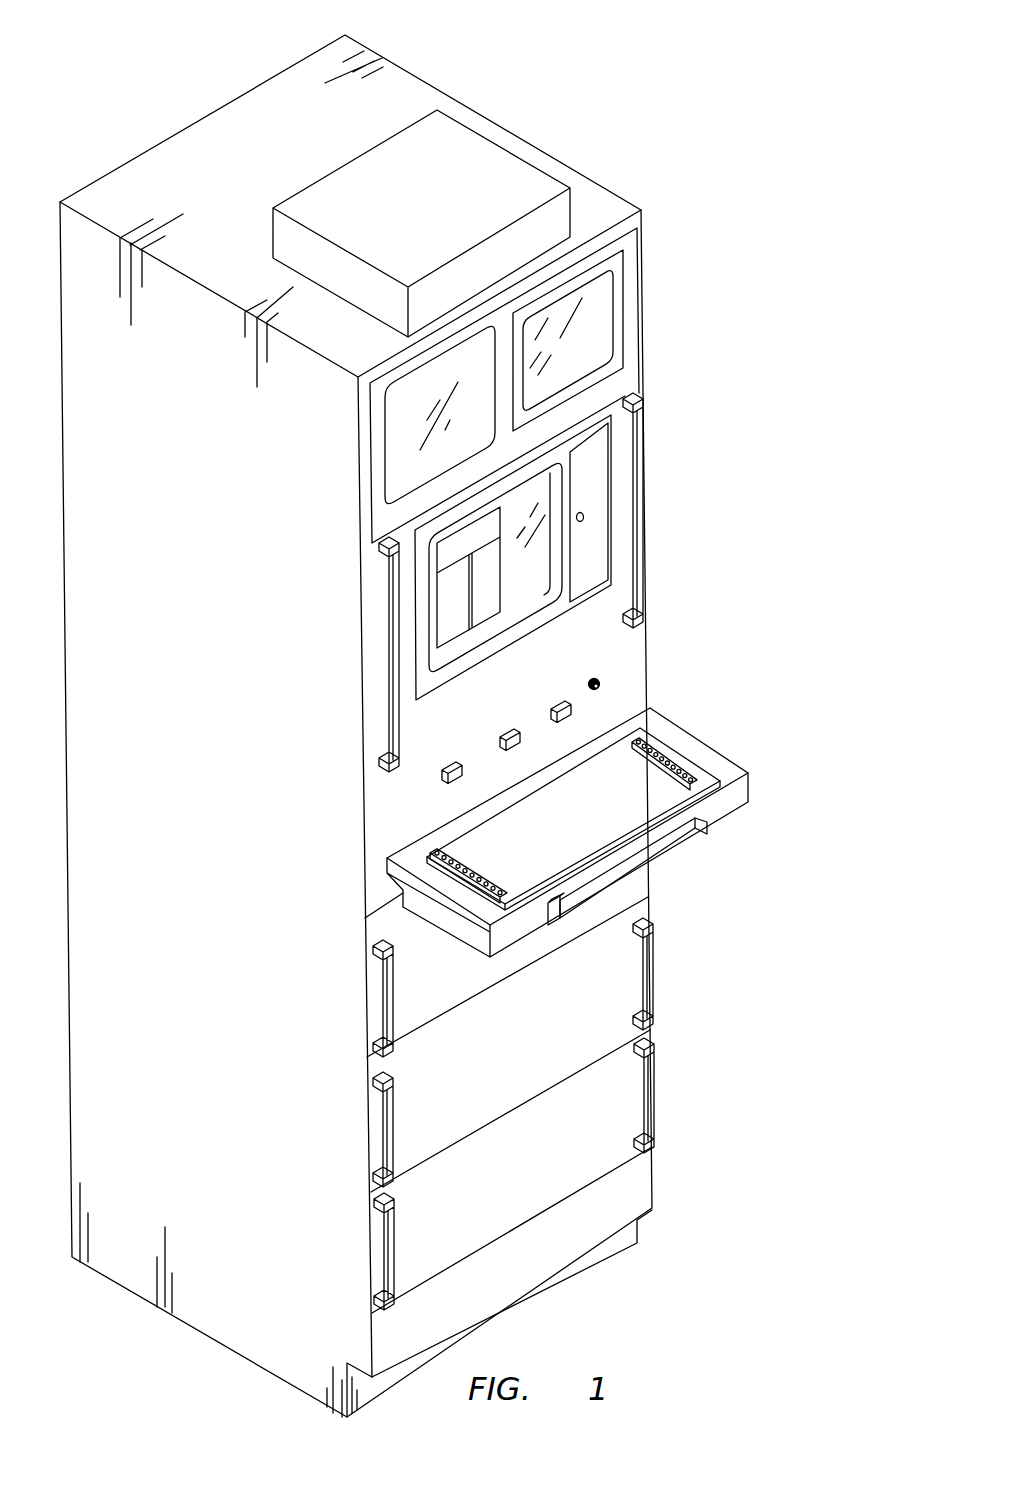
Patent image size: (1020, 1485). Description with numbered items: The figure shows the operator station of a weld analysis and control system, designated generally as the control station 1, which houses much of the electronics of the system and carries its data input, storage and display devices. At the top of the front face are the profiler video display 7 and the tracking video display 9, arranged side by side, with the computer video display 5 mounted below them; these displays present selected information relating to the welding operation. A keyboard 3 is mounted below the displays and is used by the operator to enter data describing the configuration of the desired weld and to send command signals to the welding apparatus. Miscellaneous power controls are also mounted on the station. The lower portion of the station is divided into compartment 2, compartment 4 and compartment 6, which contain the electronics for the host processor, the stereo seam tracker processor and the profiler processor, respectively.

The control station 1 is at (683, 483).
The compartment 2 is at (595, 912).
The keyboard 3 is at (685, 767).
The compartment 4 is at (590, 1017).
The computer video display 5 is at (523, 557).
The compartment 6 is at (587, 1148).
The profiler video display 7 is at (565, 345).
The tracking video display 9 is at (407, 430).